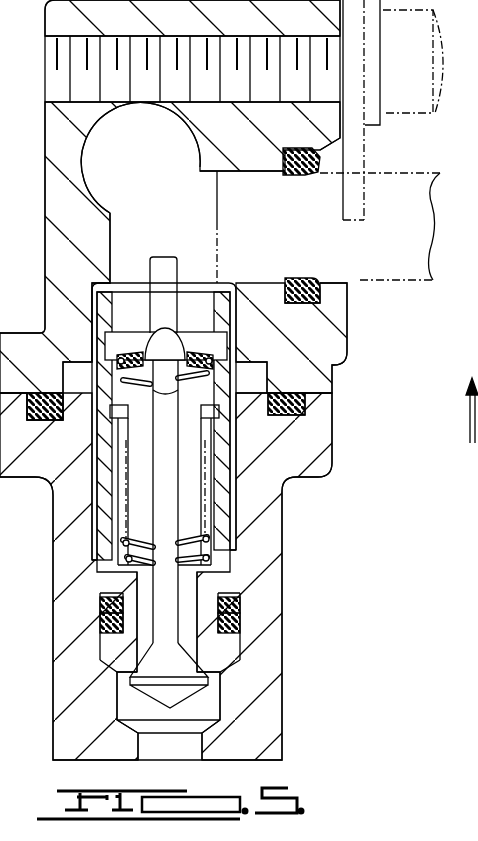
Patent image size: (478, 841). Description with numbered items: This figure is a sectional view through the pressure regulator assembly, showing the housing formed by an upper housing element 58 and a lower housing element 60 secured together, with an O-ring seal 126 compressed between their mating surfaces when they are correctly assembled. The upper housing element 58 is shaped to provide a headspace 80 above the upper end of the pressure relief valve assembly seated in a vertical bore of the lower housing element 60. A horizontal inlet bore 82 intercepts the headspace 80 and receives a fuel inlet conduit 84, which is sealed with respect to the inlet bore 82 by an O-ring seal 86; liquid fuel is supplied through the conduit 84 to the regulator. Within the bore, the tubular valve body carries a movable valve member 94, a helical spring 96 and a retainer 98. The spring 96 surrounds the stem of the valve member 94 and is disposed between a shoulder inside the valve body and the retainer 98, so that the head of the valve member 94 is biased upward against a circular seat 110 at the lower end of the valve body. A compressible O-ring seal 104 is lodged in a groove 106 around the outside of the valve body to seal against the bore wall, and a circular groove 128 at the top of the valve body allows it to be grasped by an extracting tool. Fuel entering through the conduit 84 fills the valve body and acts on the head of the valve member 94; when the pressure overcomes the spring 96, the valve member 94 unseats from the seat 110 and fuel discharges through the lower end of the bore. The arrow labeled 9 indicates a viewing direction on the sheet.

The upper housing element 58 is at (67, 267).
The lower housing element 60 is at (278, 738).
The headspace 80 is at (110, 211).
The horizontal inlet bore 82 is at (261, 177).
The fuel inlet conduit 84 is at (428, 192).
The O-ring seal 86 is at (305, 283).
The movable valve member 94 is at (202, 709).
The helical spring 96 is at (238, 548).
The retainer 98 is at (124, 352).
The O-ring seal 104 is at (240, 607).
The groove 106 is at (238, 628).
The circular seat 110 is at (202, 667).
The O-ring seal 126 is at (305, 406).
The circular grooves 128 is at (222, 345).
The section view arrow 9 is at (458, 410).